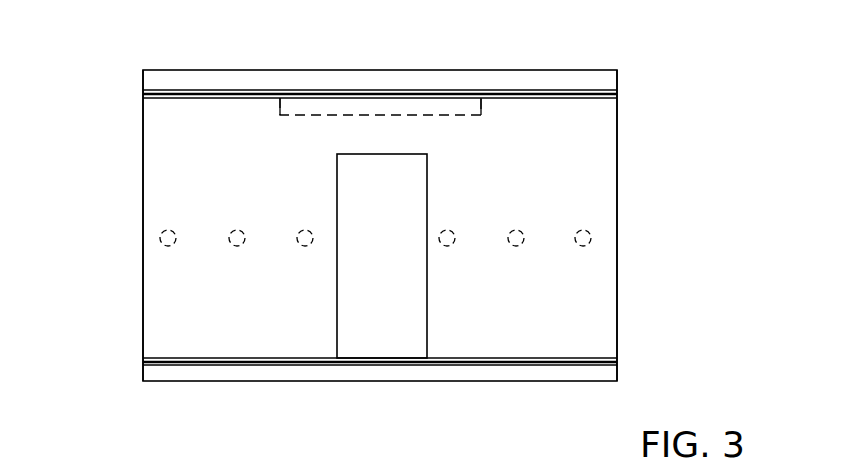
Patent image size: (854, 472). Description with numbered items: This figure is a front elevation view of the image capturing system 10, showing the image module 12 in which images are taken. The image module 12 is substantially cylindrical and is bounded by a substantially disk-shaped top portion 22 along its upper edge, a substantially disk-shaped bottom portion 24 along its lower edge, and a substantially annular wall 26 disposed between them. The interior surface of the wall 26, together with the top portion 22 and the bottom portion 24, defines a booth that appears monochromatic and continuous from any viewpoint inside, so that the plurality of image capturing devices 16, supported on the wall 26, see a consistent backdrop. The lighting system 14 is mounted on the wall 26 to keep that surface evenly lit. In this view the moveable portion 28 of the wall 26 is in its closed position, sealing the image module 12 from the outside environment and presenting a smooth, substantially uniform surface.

The image capturing system 10 is at (641, 98).
The image module 12 is at (143, 244).
The lighting system 14 is at (280, 105).
The image capturing devices 16 is at (163, 231).
The top portion 22 is at (362, 70).
The bottom portion 24 is at (520, 381).
The wall 26 is at (617, 224).
The moveable portion 28 is at (372, 318).